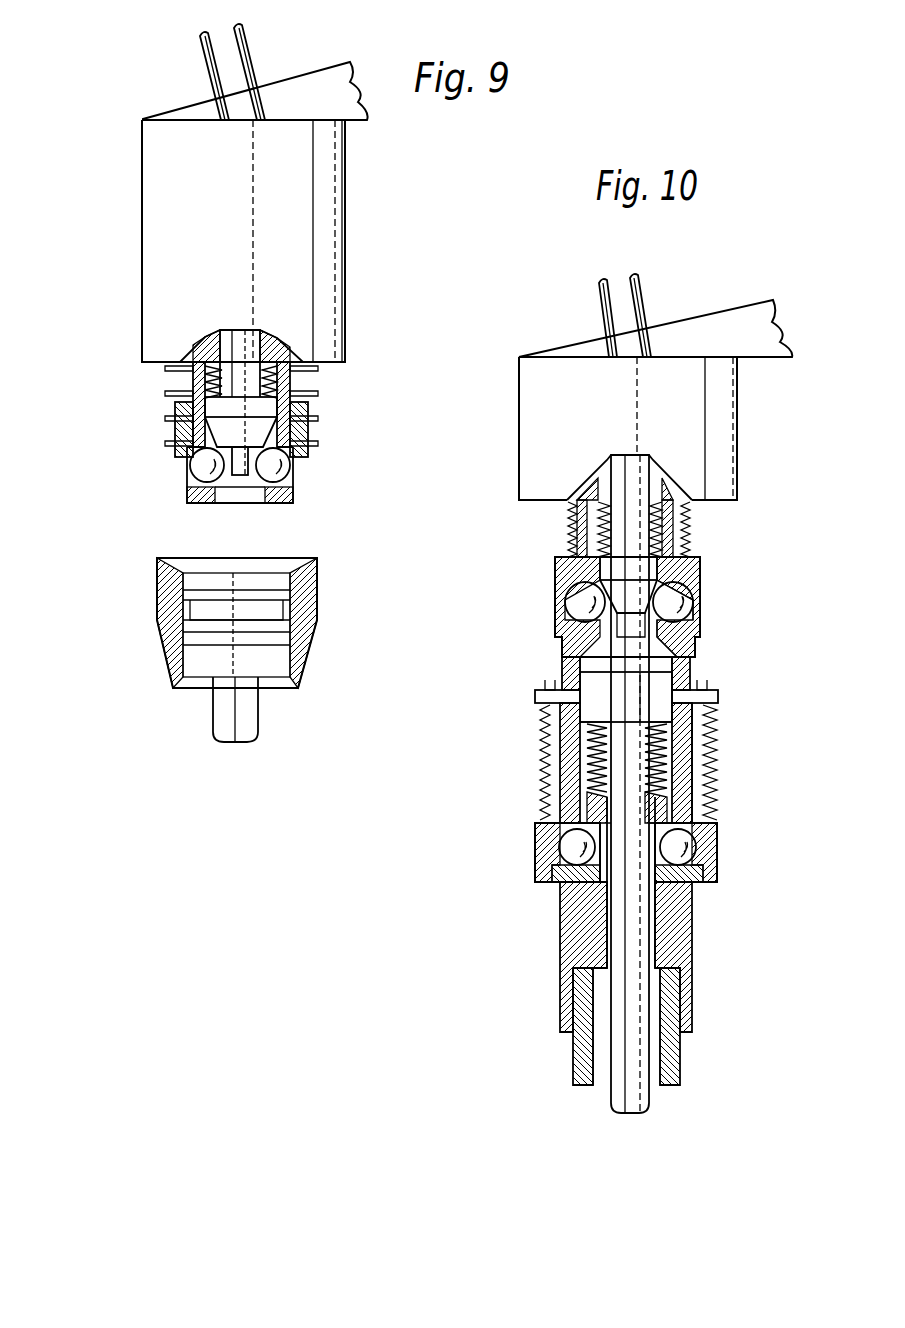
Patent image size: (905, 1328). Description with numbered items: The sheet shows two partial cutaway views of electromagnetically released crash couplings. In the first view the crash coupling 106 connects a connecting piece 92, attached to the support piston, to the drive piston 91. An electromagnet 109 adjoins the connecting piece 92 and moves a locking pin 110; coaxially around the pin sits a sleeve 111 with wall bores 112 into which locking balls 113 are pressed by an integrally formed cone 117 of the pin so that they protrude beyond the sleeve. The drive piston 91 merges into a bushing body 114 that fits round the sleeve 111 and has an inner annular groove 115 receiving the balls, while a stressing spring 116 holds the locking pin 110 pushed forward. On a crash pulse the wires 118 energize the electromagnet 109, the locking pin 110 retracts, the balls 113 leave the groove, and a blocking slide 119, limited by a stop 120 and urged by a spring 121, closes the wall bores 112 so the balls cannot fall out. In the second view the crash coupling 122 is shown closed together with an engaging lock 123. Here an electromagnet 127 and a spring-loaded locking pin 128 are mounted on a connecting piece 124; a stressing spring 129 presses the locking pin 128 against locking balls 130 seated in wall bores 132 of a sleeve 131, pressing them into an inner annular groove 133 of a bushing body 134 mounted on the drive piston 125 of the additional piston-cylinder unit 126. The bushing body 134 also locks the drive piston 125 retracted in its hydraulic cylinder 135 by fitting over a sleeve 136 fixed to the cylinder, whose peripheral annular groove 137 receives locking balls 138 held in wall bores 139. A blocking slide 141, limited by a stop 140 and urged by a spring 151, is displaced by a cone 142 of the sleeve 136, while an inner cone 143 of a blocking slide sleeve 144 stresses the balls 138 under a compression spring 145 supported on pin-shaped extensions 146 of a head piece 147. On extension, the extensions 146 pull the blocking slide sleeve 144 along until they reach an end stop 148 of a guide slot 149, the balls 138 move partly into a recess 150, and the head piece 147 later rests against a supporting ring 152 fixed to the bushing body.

In FIG. 9, the drive piston 91 is at (217, 727).
In FIG. 9, the connecting piece 92 is at (313, 83).
In FIG. 9, the crash coupling 106 is at (122, 548).
In FIG. 9, the electromagnet 109 is at (327, 187).
In FIG. 9, the locking pin 110 is at (235, 343).
In FIG. 9, the sleeve 111 is at (287, 433).
In FIG. 9, the wall bores 112 is at (293, 483).
In FIG. 9, the locking balls 113 is at (197, 508).
In FIG. 9, the bushing body 114 is at (178, 607).
In FIG. 9, the annular groove 115 is at (172, 622).
In FIG. 9, the stressing spring 116 is at (205, 365).
In FIG. 9, the cone 117 is at (235, 437).
In FIG. 9, the wires 118 is at (248, 72).
In FIG. 9, the blocking slide 119 is at (178, 458).
In FIG. 9, the stop 120 is at (305, 413).
In FIG. 9, the spring 121 is at (308, 383).
In FIG. 10, the crash coupling 122 is at (538, 561).
In FIG. 10, the engaging lock 123 is at (530, 956).
In FIG. 10, the connecting piece 124 is at (715, 327).
In FIG. 10, the drive piston 125 is at (620, 1065).
In FIG. 10, the additional piston-cylinder unit 126 is at (468, 864).
In FIG. 10, the electromagnet 127 is at (533, 393).
In FIG. 10, the locking pin 128 is at (637, 478).
In FIG. 10, the stressing spring 129 is at (655, 545).
In FIG. 10, the locking balls 130 is at (583, 605).
In FIG. 10, the sleeve 131 is at (603, 513).
In FIG. 10, the wall bores 132 is at (568, 600).
In FIG. 10, the annular groove 133 is at (692, 600).
In FIG. 10, the bushing body 134 is at (690, 633).
In FIG. 10, the hydraulic cylinder 135 is at (577, 1070).
In FIG. 10, the sleeve 136 is at (675, 960).
In FIG. 10, the annular groove 137 is at (683, 883).
In FIG. 10, the locking balls 138 is at (573, 845).
In FIG. 10, the wall bores 139 is at (553, 882).
In FIG. 10, the stop 140 is at (587, 748).
In FIG. 10, the blocking slide 141 is at (672, 790).
In FIG. 10, the cone 142 is at (690, 790).
In FIG. 10, the inner cone 143 is at (713, 873).
In FIG. 10, the blocking slide sleeve 144 is at (712, 852).
In FIG. 10, the compression spring 145 is at (537, 803).
In FIG. 10, the extensions 146 is at (708, 700).
In FIG. 10, the head piece 147 is at (647, 700).
In FIG. 10, the end stop 148 is at (570, 665).
In FIG. 10, the guide slot 149 is at (683, 672).
In FIG. 10, the recess 150 is at (542, 880).
In FIG. 10, the spring 151 is at (587, 773).
In FIG. 10, the supporting ring 152 is at (585, 724).